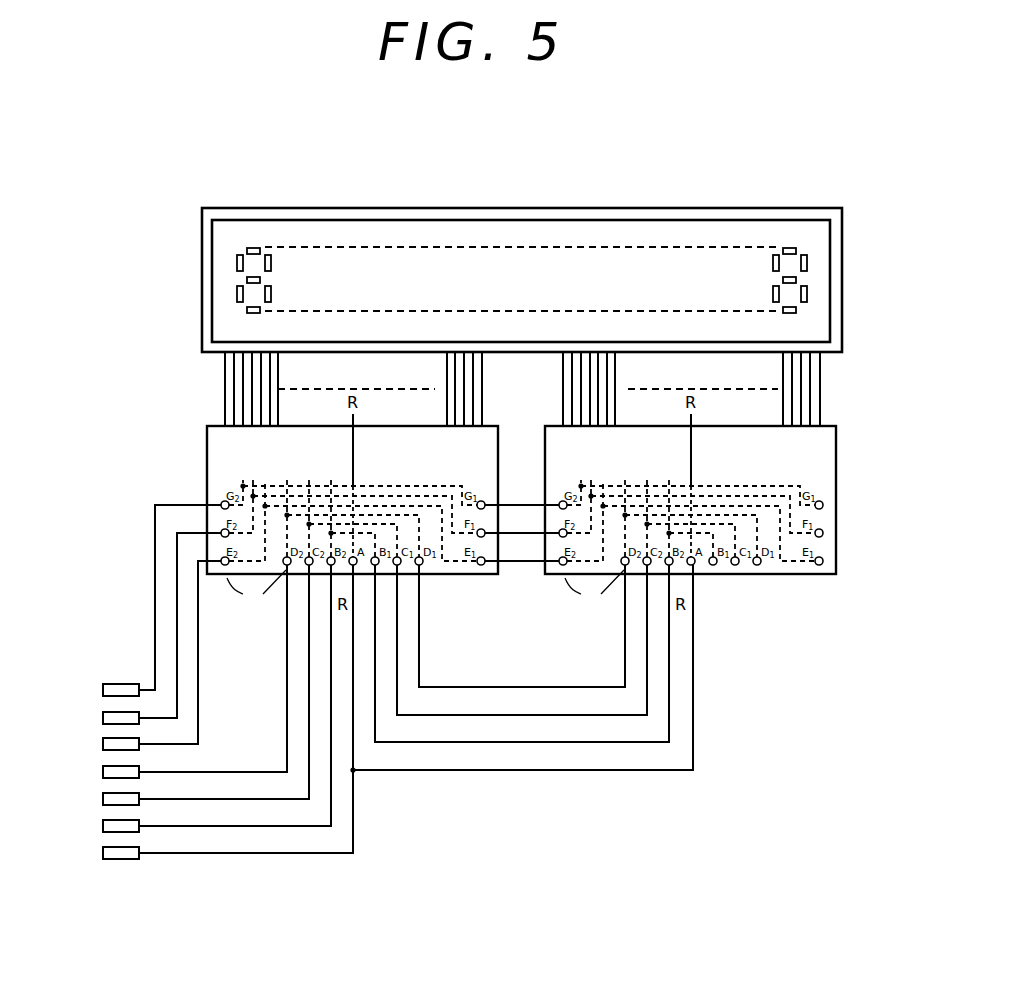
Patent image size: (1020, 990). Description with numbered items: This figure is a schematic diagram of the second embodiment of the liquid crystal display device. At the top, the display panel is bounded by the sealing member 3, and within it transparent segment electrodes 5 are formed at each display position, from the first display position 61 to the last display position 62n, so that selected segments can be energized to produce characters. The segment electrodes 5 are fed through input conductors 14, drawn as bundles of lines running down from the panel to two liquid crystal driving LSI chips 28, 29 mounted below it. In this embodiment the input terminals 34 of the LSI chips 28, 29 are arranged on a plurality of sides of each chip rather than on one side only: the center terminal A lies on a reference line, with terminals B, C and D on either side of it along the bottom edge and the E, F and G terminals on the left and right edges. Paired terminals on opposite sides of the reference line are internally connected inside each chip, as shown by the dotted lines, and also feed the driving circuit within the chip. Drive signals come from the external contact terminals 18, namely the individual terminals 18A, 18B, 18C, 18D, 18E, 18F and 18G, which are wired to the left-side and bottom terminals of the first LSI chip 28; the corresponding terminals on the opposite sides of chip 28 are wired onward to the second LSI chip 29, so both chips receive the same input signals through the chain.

The sealing member 3 is at (208, 252).
The segment electrodes 5 is at (233, 290).
The display position 61 is at (250, 242).
The display position 62n is at (785, 242).
The input conductors 14 is at (225, 402).
The LSI chip 28 is at (230, 468).
The LSI chip 29 is at (549, 466).
The input terminal 34 is at (425, 596).
The external contact terminals 18 is at (206, 684).
The external contact terminal 18A is at (103, 854).
The external contact terminal 18B is at (103, 827).
The external contact terminal 18C is at (103, 800).
The external contact terminal 18D is at (103, 773).
The external contact terminal 18E is at (103, 745).
The external contact terminal 18F is at (103, 719).
The external contact terminal 18G is at (103, 691).